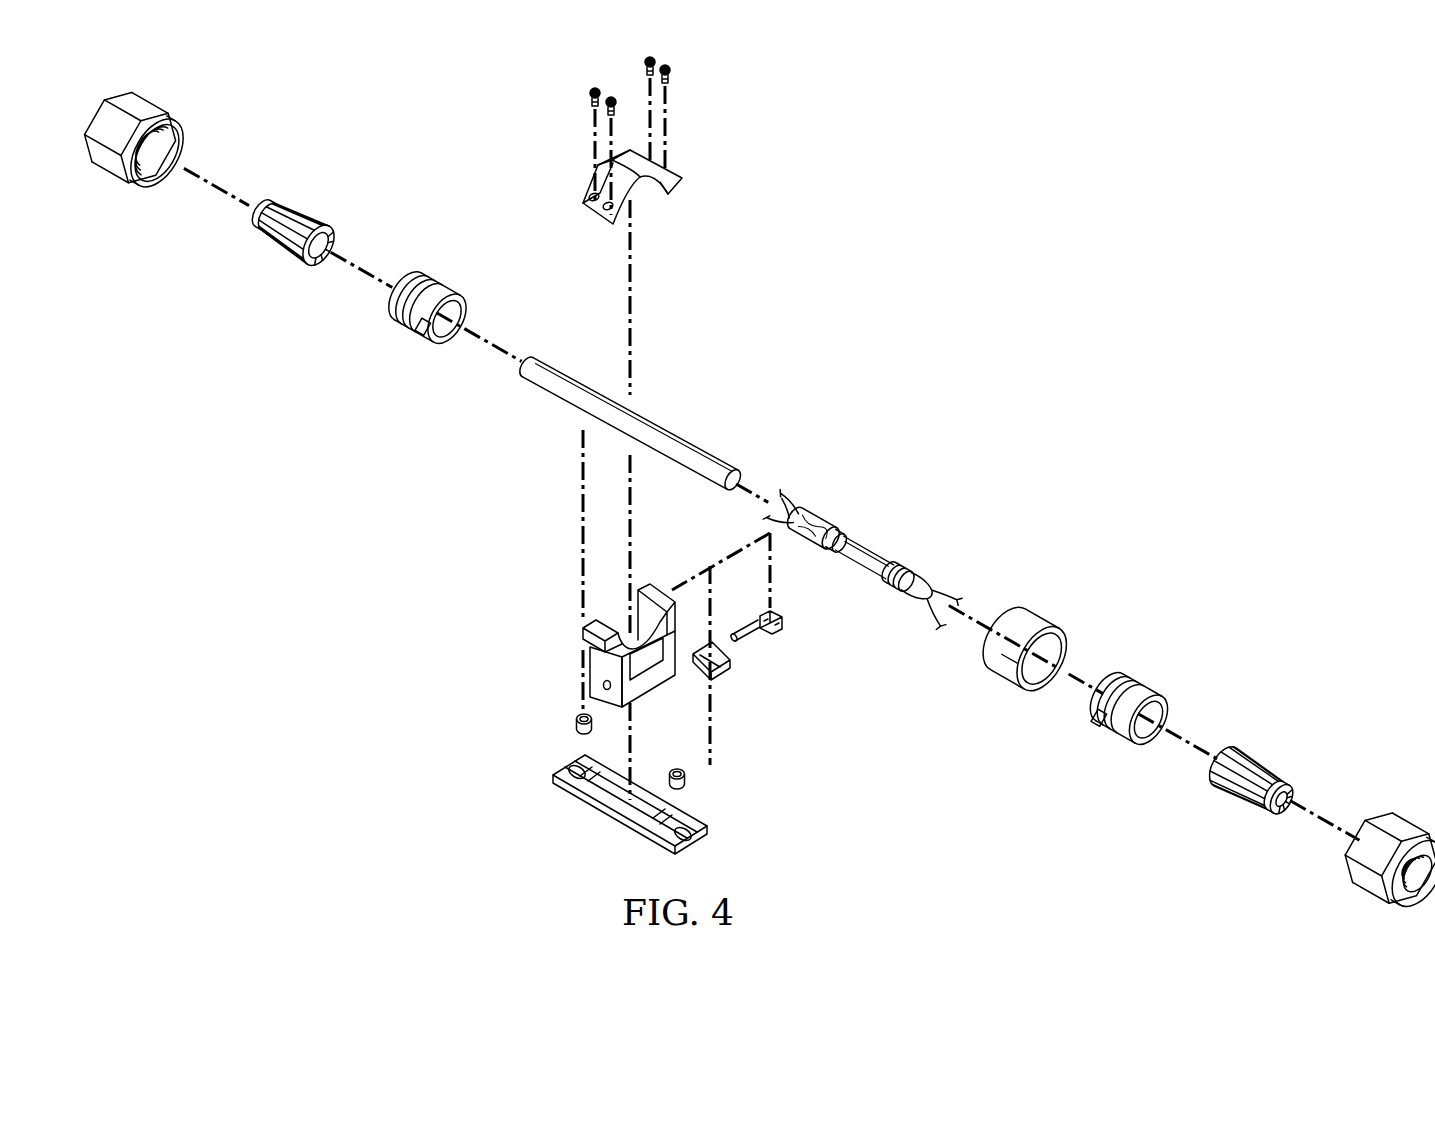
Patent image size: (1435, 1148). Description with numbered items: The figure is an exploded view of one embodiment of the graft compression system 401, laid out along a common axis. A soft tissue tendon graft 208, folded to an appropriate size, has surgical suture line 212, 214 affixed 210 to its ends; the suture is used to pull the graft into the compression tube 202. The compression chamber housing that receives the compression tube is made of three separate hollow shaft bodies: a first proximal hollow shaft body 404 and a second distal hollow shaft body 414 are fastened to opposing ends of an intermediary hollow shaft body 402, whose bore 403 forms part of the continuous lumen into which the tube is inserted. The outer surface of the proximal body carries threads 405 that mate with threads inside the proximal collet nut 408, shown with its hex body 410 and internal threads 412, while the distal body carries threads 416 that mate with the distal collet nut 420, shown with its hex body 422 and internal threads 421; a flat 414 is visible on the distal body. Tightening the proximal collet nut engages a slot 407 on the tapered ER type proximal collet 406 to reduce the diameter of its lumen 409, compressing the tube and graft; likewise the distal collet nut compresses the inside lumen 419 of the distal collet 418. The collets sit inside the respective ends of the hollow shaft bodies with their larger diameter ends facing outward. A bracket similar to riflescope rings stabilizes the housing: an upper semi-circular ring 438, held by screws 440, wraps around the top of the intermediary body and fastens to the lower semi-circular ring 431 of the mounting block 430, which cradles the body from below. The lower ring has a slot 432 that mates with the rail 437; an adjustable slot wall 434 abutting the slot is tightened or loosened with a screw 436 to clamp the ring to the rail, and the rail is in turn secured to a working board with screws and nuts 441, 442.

The cable clamp assembly 401 is at (988, 321).
The compression tube 202 is at (672, 432).
The soft tissue tendon graft 208 is at (868, 552).
The affixation of suture line 210 is at (898, 576).
The surgical suture line 212 is at (783, 511).
The surgical suture line 214 is at (939, 608).
The intermediary hollow shaft body 402 is at (1030, 658).
The coupling ring bore 403 is at (1047, 624).
The first proximal hollow shaft body 404 is at (1142, 687).
The threads of first proximal hollow shaft body 405 is at (1123, 672).
The proximal collet 406 is at (1281, 790).
The slot 407 is at (1253, 757).
The proximal collet nut 408 is at (1384, 863).
The lumen 409 is at (1282, 799).
The nut hex body 410 is at (1380, 894).
The nut internal threads 412 is at (1423, 898).
The second distal hollow shaft body 414 is at (423, 326).
The threads of second distal hollow shaft body 416 is at (426, 304).
The distal collet 418 is at (299, 242).
The inside lumen of distal collet 419 is at (316, 213).
The distal collet nut 420 is at (143, 142).
The nut internal threads 421 is at (158, 186).
The nut hex body 422 is at (152, 94).
The mounting block 430 is at (620, 665).
The lower semi-circular ring 431 is at (590, 668).
The slot 432 is at (648, 669).
The adjustable slot wall 434 is at (714, 668).
The screw 436 is at (761, 647).
The rail 437 is at (610, 812).
The upper semi-circular ring 438 is at (683, 182).
The screws 440 is at (669, 72).
The nut 441 is at (575, 765).
The nuts 442 is at (690, 784).